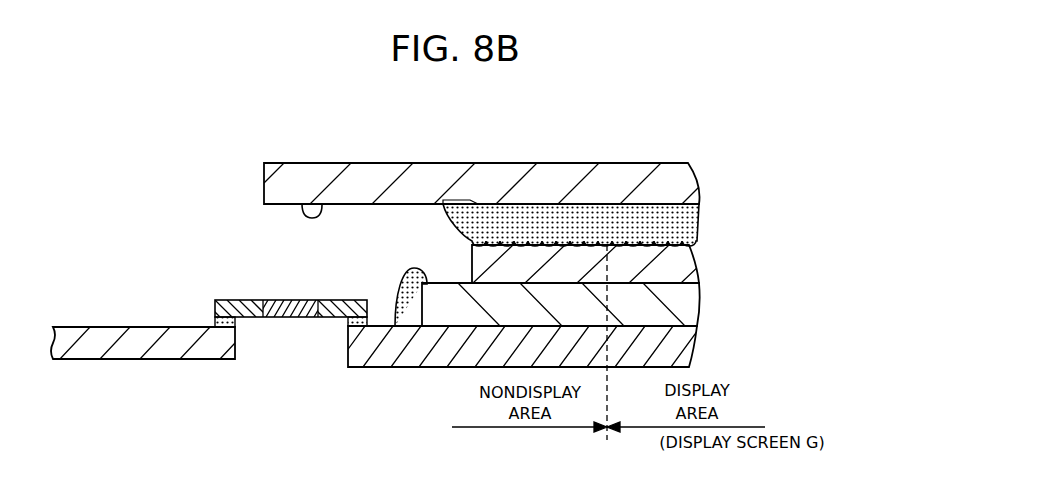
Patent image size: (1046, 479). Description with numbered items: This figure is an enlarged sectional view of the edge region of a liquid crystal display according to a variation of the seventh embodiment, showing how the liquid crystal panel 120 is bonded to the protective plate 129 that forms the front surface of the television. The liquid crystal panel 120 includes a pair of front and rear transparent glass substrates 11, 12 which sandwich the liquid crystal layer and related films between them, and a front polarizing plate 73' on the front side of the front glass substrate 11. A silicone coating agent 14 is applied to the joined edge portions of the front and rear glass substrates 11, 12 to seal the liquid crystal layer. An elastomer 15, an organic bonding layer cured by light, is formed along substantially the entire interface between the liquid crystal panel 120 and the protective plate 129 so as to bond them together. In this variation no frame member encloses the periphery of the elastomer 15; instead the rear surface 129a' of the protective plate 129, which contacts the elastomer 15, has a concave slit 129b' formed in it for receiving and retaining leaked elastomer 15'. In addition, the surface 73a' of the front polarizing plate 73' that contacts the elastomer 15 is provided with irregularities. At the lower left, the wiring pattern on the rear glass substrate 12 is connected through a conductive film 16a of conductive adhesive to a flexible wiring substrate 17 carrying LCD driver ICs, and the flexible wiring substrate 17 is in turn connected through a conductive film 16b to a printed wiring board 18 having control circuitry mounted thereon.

The protective plate 129 is at (676, 188).
The rear surface of the protective plate 129a' is at (336, 162).
The concave slit 129b' is at (460, 155).
The surface of the front polarizing plate 73a' is at (575, 173).
The elastomer 15 is at (603, 225).
The leaked elastomer 15' is at (415, 225).
The front polarizing plate 73' is at (621, 265).
The front glass substrate 11 is at (678, 308).
The rear glass substrate 12 is at (678, 339).
The liquid crystal panel 120 is at (770, 255).
The silicone coating agent 14 is at (405, 279).
The flexible wiring substrate 17 is at (276, 300).
The conductive film 16a is at (348, 322).
The conductive film 16b is at (215, 320).
The printed wiring board 18 is at (185, 360).